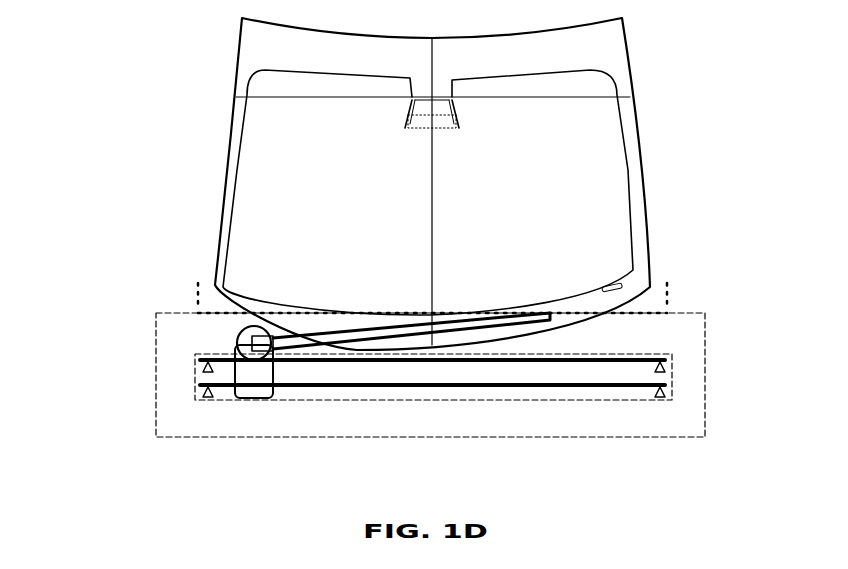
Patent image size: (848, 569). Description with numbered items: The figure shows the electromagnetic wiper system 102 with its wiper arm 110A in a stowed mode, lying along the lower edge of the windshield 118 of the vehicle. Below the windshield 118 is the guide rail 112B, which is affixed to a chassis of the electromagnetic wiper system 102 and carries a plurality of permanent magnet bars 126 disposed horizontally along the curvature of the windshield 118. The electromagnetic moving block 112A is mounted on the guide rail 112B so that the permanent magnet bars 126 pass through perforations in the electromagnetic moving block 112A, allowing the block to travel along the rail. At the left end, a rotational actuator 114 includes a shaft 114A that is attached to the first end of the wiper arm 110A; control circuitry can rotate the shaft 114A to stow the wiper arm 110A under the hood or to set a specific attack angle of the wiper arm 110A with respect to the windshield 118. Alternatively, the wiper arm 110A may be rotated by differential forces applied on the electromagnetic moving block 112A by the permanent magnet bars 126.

The electromagnetic wiper system 102 is at (156, 333).
The wiper arm 110A is at (345, 330).
The electromagnetic moving block 112A is at (252, 378).
The guide rail 112B is at (650, 354).
The rotational actuator 114 is at (240, 333).
The shaft 114A is at (250, 338).
The windshield 118 is at (615, 141).
The permanent magnet bars 126 is at (387, 385).